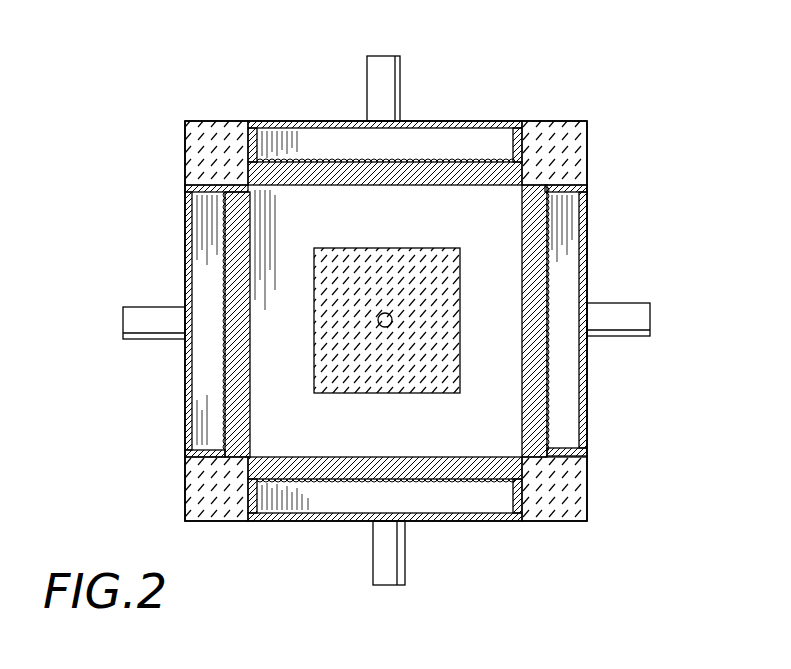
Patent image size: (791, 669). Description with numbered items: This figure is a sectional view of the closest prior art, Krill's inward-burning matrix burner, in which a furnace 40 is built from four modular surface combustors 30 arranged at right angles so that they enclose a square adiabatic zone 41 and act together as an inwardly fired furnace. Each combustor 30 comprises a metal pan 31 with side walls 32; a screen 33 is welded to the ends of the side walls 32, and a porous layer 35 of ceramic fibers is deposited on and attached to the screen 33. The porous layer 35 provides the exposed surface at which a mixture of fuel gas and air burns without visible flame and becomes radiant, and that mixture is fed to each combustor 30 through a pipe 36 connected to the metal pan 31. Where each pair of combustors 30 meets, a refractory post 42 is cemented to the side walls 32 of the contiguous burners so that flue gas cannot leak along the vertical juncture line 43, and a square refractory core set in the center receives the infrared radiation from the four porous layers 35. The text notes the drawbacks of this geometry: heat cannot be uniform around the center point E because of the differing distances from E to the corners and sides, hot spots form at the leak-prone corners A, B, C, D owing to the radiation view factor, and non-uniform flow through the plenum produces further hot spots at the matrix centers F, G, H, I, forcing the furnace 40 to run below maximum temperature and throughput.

The surface combustor 30 is at (441, 118).
The metal pan 31 is at (280, 125).
The side wall 32 is at (240, 148).
The screen 33 is at (228, 262).
The porous layer 35 is at (520, 253).
The pipe 36 is at (367, 87).
The furnace 40 is at (478, 97).
The square adiabatic zone 41 is at (488, 303).
The refractory post 42 is at (185, 165).
The juncture line 43 is at (258, 190).
The corner A is at (268, 205).
The corner B is at (503, 200).
The corner C is at (490, 437).
The corner D is at (252, 400).
The center point E is at (378, 320).
The matrix center point F is at (222, 321).
The matrix center point G is at (383, 153).
The matrix center point H is at (553, 318).
The matrix center point I is at (385, 487).